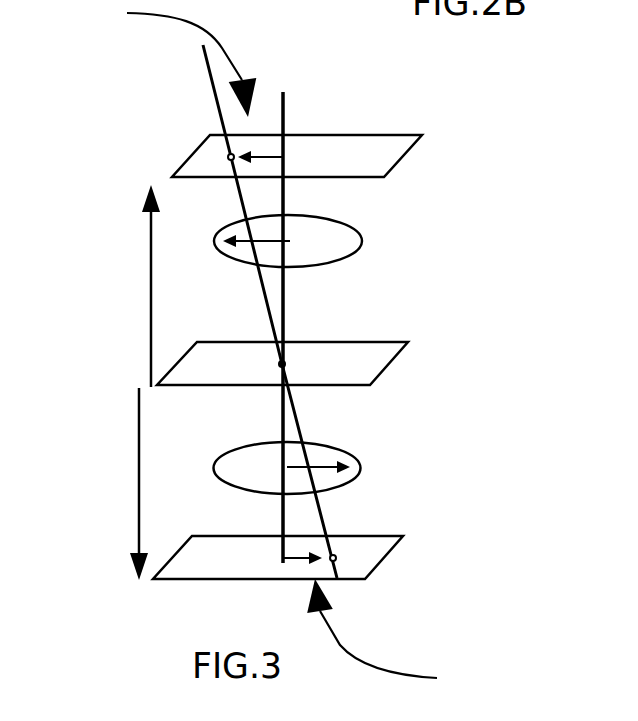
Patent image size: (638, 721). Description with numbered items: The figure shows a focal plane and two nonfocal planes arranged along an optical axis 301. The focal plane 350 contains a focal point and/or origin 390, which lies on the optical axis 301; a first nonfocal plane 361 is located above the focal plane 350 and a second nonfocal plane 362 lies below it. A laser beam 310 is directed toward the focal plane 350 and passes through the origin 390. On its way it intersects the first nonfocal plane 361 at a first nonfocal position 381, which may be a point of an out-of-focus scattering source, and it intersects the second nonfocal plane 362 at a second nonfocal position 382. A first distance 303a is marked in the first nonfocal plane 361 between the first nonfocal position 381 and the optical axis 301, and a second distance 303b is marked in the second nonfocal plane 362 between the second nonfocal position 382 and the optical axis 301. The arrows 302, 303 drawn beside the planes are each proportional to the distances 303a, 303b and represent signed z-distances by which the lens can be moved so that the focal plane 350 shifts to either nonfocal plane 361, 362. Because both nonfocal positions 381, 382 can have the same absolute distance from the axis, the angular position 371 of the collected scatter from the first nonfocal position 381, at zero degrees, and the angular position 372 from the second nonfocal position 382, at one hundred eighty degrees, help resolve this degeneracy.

The optical axis 301 is at (287, 97).
The laser beam 310 is at (203, 47).
The first distance 303a is at (158, 59).
The second distance 303b is at (404, 636).
The first nonfocal plane 361 is at (422, 136).
The first nonfocal position 381 is at (229, 152).
The angular position 371 is at (352, 234).
The arrow 302 is at (150, 324).
The arrow 303 is at (139, 450).
The focal plane 350 is at (393, 362).
The focal point 390 is at (286, 364).
The angular position 372 is at (355, 453).
The second nonfocal plane 362 is at (380, 564).
The second nonfocal position 382 is at (334, 554).